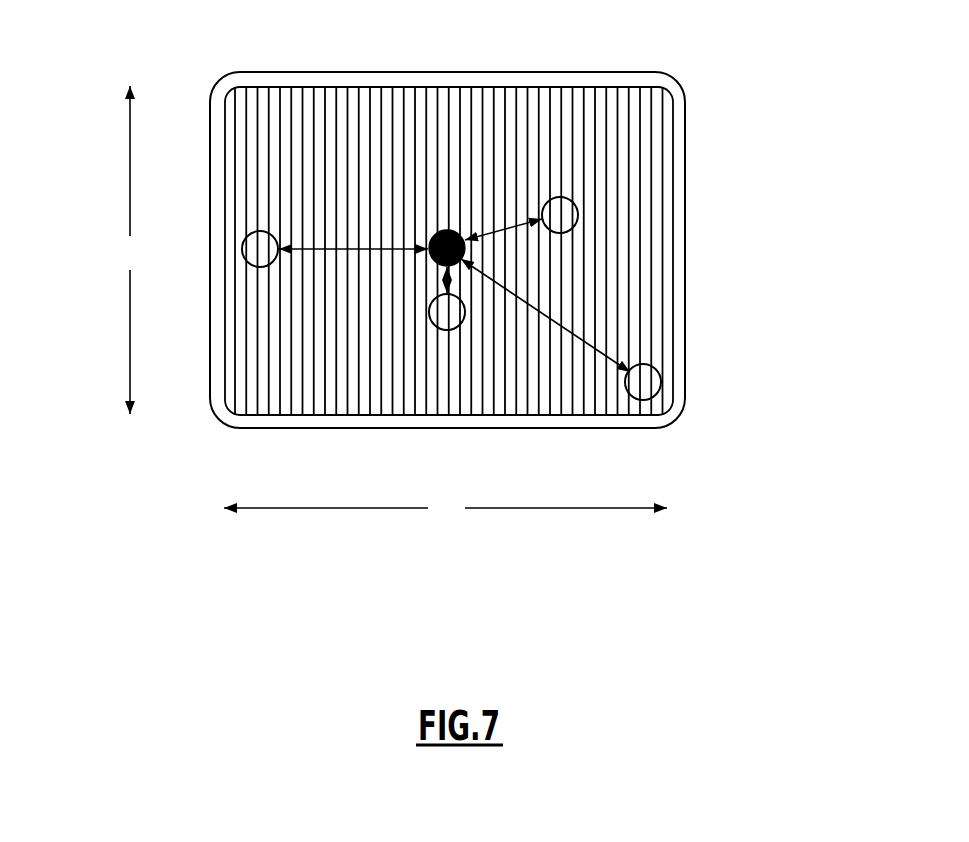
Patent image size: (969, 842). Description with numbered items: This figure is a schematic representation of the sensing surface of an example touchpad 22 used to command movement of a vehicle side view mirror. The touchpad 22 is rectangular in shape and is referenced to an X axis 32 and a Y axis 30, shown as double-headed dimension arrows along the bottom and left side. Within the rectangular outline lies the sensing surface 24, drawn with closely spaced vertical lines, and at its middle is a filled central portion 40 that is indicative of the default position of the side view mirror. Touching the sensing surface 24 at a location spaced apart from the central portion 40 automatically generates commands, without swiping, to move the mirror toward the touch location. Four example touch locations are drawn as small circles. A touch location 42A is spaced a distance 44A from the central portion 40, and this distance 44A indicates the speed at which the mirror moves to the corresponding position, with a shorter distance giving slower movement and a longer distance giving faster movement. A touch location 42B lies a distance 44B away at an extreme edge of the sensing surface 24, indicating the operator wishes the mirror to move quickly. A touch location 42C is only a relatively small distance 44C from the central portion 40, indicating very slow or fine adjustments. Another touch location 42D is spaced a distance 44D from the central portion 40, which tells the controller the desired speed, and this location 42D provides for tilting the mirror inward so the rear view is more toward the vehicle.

The touchpad 22 is at (760, 188).
The sensing surface 24 is at (640, 287).
The Y axis 30 is at (453, 529).
The X axis 32 is at (107, 256).
The central portion 40 is at (444, 228).
The touch location 42A is at (580, 210).
The touch location 42B is at (657, 396).
The touch location 42C is at (455, 333).
The touch location 42D is at (246, 264).
The distance 44A is at (510, 220).
The distance 44B is at (560, 323).
The distance 44C is at (438, 285).
The distance 44D is at (346, 252).